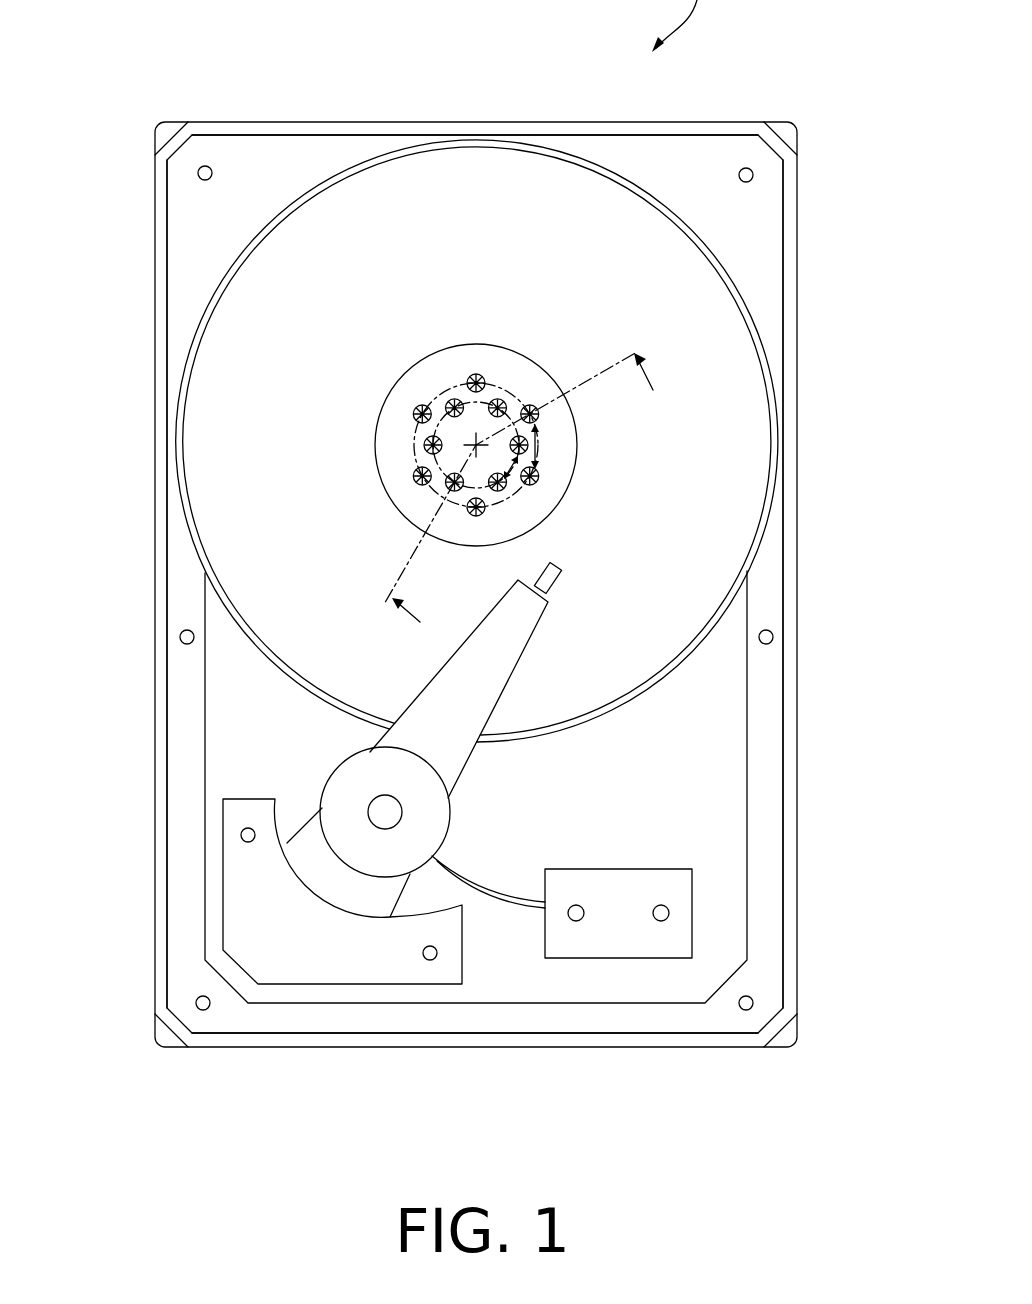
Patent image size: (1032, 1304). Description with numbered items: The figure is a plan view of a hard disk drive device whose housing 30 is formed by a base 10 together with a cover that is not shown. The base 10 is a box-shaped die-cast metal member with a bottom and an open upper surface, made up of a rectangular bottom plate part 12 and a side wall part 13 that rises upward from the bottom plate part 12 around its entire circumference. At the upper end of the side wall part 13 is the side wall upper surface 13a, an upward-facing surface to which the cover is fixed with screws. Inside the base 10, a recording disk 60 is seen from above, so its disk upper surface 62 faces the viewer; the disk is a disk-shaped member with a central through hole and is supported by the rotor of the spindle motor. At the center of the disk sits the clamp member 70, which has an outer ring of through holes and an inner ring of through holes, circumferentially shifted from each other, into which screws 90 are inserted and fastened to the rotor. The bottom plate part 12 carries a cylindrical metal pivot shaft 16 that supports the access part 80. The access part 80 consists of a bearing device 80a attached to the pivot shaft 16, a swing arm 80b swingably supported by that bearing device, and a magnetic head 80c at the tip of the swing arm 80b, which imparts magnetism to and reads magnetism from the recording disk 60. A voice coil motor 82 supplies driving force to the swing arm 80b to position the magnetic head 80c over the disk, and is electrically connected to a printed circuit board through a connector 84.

The base 10 is at (490, 587).
The bottom plate part 12 is at (710, 822).
The side wall part 13 is at (160, 152).
The side wall upper surface 13a is at (365, 135).
The pivot shaft 16 is at (385, 808).
The housing 30 is at (798, 665).
The recording disk 60 is at (680, 306).
The disk upper surface 62 is at (710, 352).
The clamp member 70 is at (392, 432).
The access part 80 is at (473, 738).
The bearing device 80a is at (390, 749).
The swing arm 80b is at (388, 731).
The magnetic head 80c is at (560, 597).
The voice coil motor 82 is at (325, 960).
The connector 84 is at (612, 935).
The screw 90 is at (420, 357).